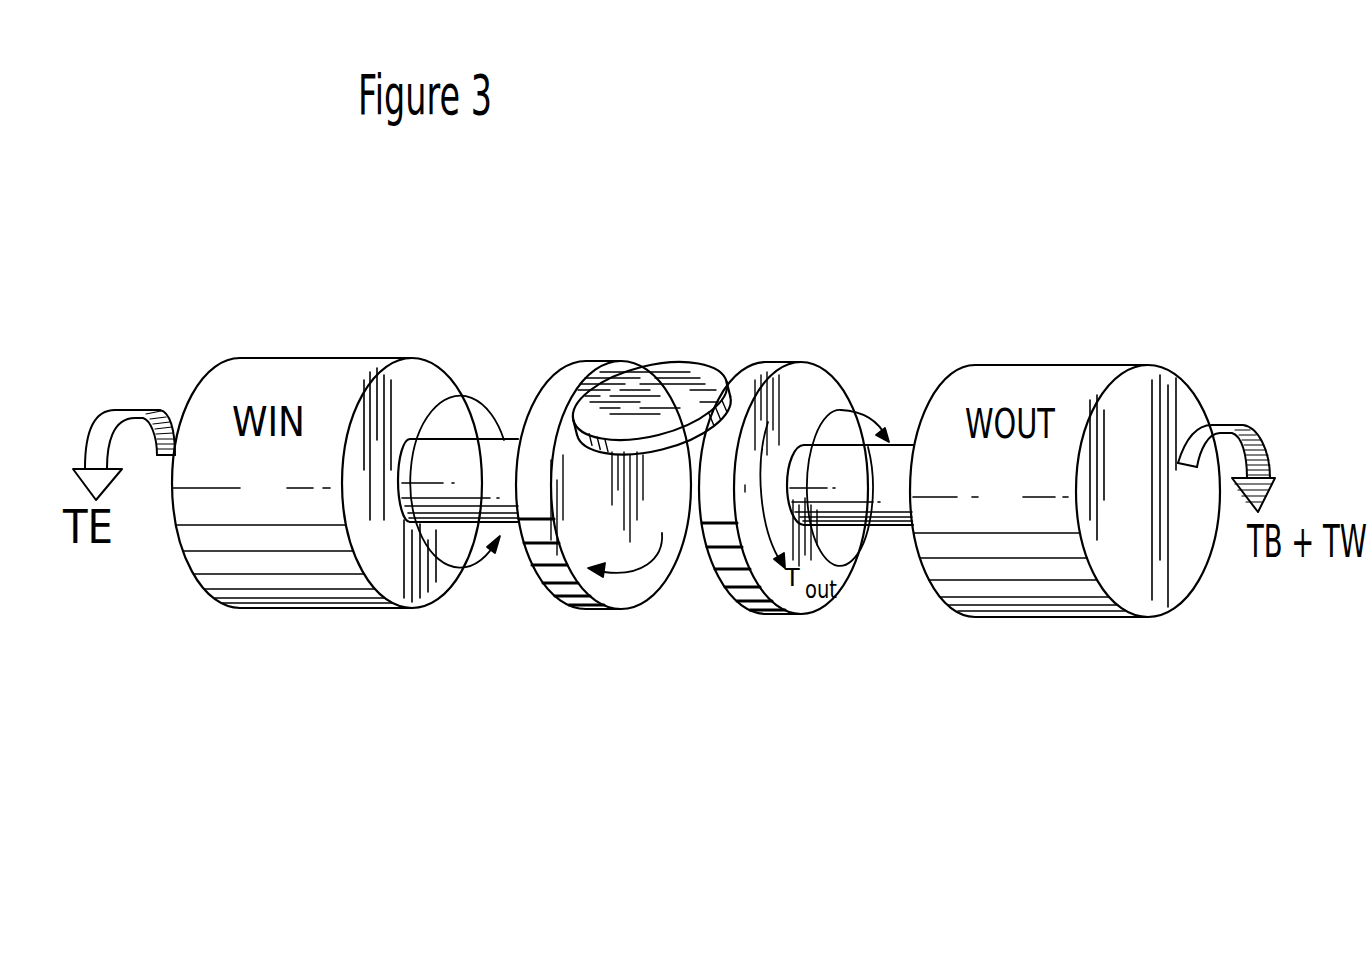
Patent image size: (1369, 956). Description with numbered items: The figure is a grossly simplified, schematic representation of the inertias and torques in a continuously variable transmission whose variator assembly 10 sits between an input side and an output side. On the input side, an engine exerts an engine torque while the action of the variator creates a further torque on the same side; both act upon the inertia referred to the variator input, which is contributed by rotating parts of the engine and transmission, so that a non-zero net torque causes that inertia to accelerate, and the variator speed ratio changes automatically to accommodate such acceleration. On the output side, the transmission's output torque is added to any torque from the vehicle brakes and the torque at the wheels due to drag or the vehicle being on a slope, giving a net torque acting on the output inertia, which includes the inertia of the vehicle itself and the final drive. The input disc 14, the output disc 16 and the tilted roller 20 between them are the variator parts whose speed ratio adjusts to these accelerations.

The flywheel torque transfer assembly 10 is at (573, 336).
The input disc 14 is at (580, 609).
The output disc 16 is at (792, 614).
The tilted roller 20 is at (684, 438).